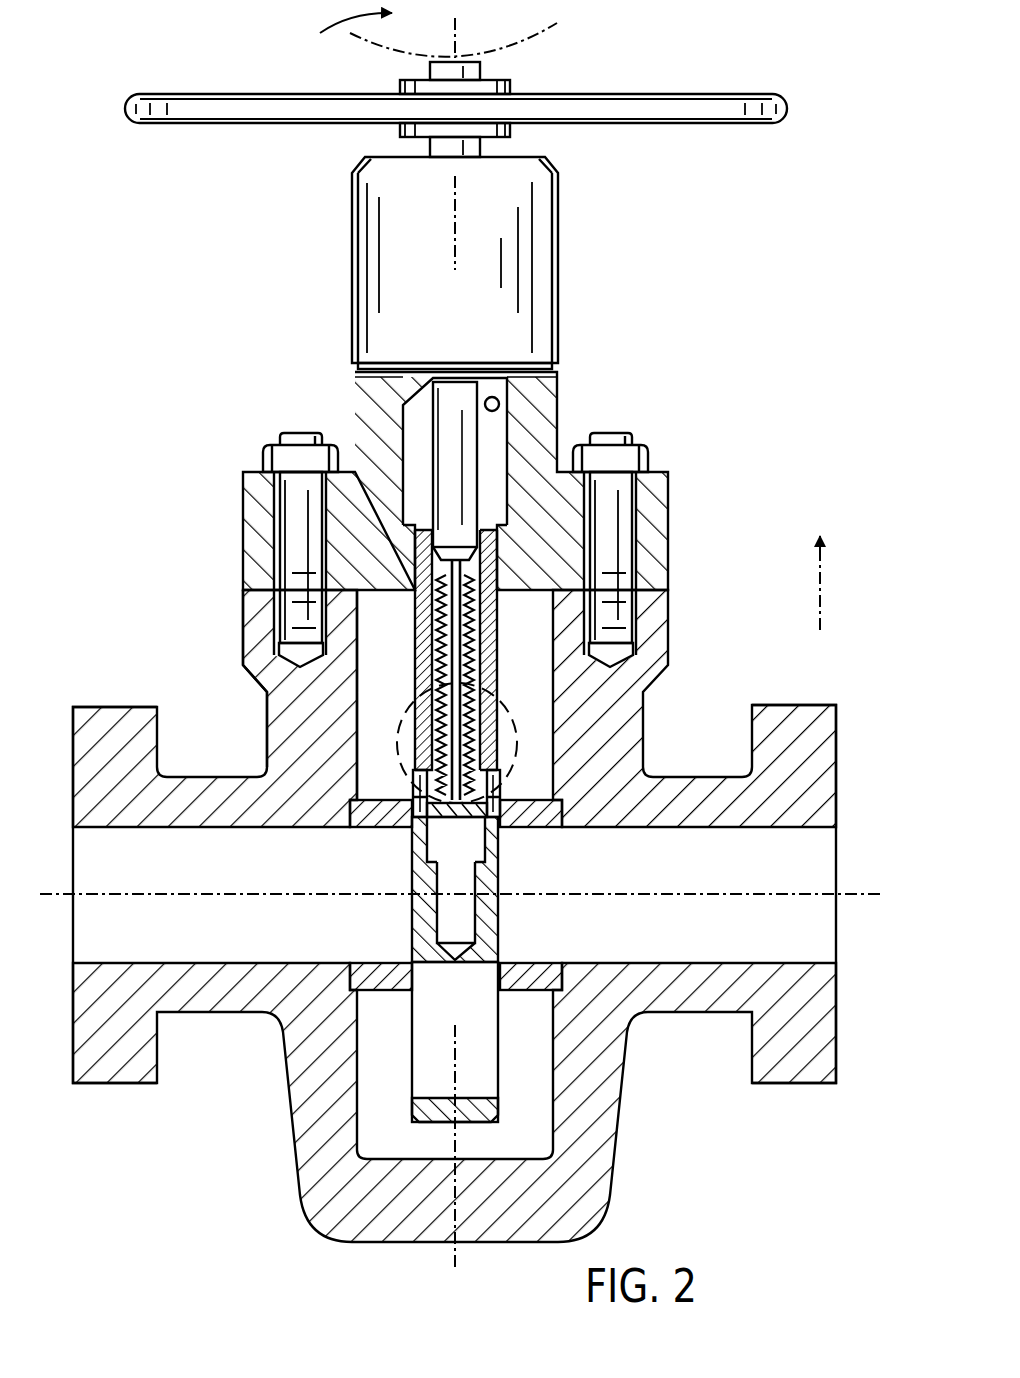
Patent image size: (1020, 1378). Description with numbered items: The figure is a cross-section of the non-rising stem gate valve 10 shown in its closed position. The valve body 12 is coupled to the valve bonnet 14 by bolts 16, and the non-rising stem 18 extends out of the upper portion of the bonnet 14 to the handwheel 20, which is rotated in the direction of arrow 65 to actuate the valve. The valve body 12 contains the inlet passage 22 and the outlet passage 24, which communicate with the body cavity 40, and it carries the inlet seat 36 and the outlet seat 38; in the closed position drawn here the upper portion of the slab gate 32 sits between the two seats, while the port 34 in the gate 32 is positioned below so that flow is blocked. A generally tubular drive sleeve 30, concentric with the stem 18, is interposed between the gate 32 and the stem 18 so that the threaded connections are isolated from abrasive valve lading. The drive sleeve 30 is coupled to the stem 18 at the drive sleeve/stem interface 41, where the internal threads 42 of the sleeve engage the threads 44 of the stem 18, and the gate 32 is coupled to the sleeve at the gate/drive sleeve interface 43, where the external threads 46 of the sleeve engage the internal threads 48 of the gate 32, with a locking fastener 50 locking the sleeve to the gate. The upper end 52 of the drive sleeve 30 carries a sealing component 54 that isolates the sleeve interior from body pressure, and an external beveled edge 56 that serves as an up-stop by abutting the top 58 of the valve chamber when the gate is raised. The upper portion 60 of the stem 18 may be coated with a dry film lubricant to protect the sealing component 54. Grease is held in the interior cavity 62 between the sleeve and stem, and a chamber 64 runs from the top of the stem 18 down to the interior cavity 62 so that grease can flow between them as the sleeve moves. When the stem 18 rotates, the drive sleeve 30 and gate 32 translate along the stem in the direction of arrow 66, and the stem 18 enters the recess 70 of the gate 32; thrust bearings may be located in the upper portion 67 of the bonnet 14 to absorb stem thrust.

The non-rising stem gate valve 10 is at (808, 60).
The valve body 12 is at (653, 768).
The valve bonnet 14 is at (670, 543).
The bolts 16 is at (628, 434).
The non-rising stem 18 is at (470, 458).
The handwheel 20 is at (712, 100).
The inlet passage 22 is at (120, 705).
The outlet passage 24 is at (760, 705).
The drive sleeve 30 is at (470, 666).
The slab gate 32 is at (412, 843).
The port 34 is at (471, 1075).
The inlet seat 36 is at (360, 832).
The outlet seat 38 is at (553, 838).
The body cavity 40 is at (382, 685).
The drive sleeve/stem interface 41 is at (510, 743).
The internal threads 42 is at (495, 623).
The gate/drive sleeve interface 43 is at (512, 742).
The threads 44 is at (495, 670).
The external threads 46 is at (505, 825).
The internal threads 48 is at (413, 868).
The locking fastener 50 is at (412, 845).
The upper end 52 is at (507, 558).
The sealing component 54 is at (413, 532).
The external beveled edge 56 is at (490, 540).
The top of the valve chamber 58 is at (499, 416).
The upper portion of the stem 60 is at (478, 448).
The interior cavity 62 is at (418, 613).
The chamber 64 is at (418, 647).
The arrow 65 is at (424, 29).
The arrow 66 is at (845, 578).
The upper portion of the bonnet 67 is at (560, 222).
The recess 70 is at (458, 910).